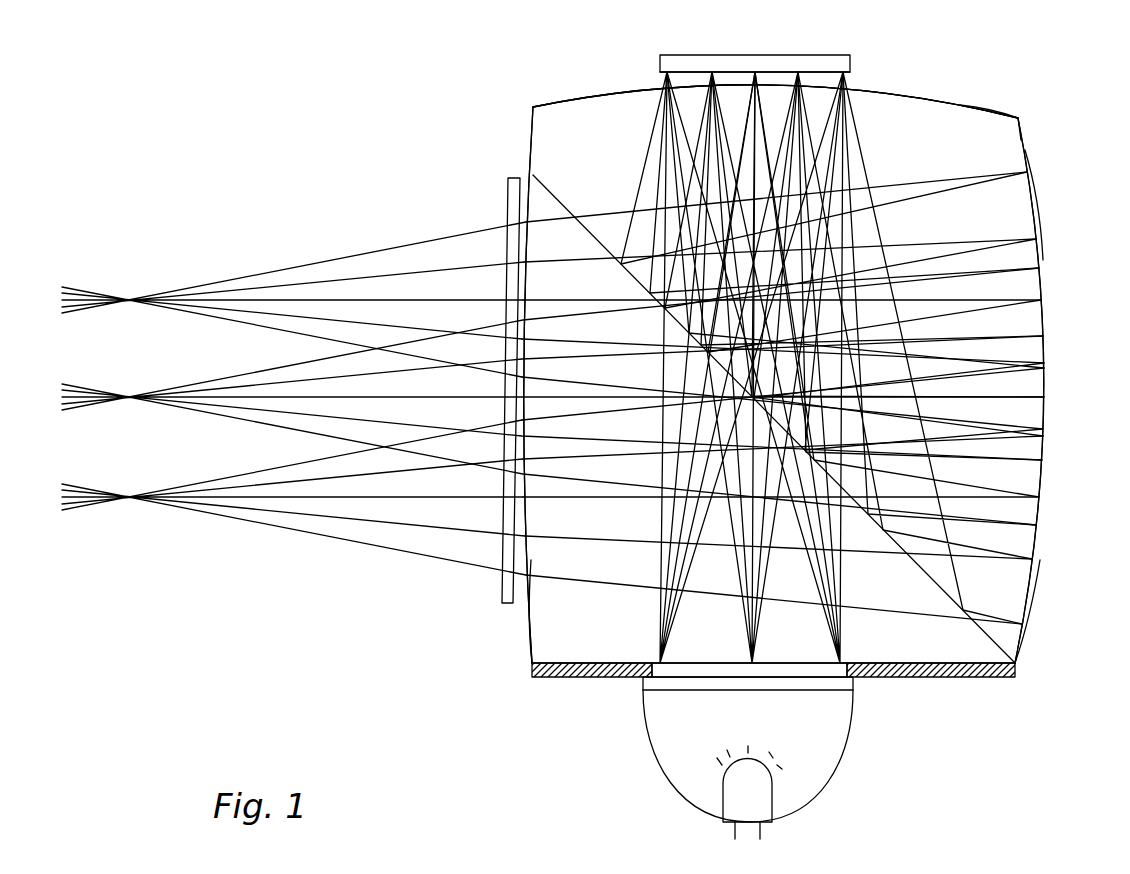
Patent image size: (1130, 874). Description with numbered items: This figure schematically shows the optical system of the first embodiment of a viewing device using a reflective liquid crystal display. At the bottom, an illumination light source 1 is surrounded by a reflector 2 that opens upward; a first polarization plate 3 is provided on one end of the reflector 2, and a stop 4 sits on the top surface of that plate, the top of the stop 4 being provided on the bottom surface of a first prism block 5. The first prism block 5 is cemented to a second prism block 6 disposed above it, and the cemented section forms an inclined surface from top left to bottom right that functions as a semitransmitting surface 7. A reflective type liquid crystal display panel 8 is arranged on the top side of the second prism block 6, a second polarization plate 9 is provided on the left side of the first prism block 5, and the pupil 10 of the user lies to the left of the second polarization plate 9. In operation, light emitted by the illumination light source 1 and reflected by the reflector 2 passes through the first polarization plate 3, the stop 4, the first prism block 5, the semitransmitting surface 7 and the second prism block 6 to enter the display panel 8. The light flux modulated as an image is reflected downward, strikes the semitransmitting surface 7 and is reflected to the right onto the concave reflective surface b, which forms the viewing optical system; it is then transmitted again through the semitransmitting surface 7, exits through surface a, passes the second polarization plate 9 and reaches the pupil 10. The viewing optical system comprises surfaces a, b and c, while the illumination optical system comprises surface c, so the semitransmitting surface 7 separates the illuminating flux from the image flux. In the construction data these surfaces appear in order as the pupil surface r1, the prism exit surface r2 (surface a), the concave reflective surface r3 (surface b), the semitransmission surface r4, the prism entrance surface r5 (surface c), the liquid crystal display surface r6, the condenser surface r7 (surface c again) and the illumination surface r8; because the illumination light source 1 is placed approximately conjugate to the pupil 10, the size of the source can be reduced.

The illumination light source 1 is at (737, 788).
The reflector 2 is at (653, 747).
The first polarization plate 3 is at (840, 690).
The stop 4 is at (975, 678).
The first prism block 5 is at (583, 647).
The second prism block 6 is at (587, 116).
The semitransmitting surface 7 is at (1003, 648).
The reflective type liquid crystal display panel 8 is at (805, 57).
The second polarization plate 9 is at (497, 588).
The pupil 10 is at (128, 498).
The pupil surface r1 is at (128, 302).
The prism exit surface r2 is at (530, 607).
The concave reflective surface r3 is at (1045, 278).
The semitransmission surface r4 is at (555, 193).
The prism entrance surface r5 is at (918, 95).
The liquid crystal display surface r6 is at (693, 57).
The condenser surface r7 is at (918, 95).
The illumination surface r8 is at (922, 663).
The prism exit surface a is at (528, 640).
The concave reflective surface b is at (1038, 203).
The prism entrance surface c is at (1003, 113).